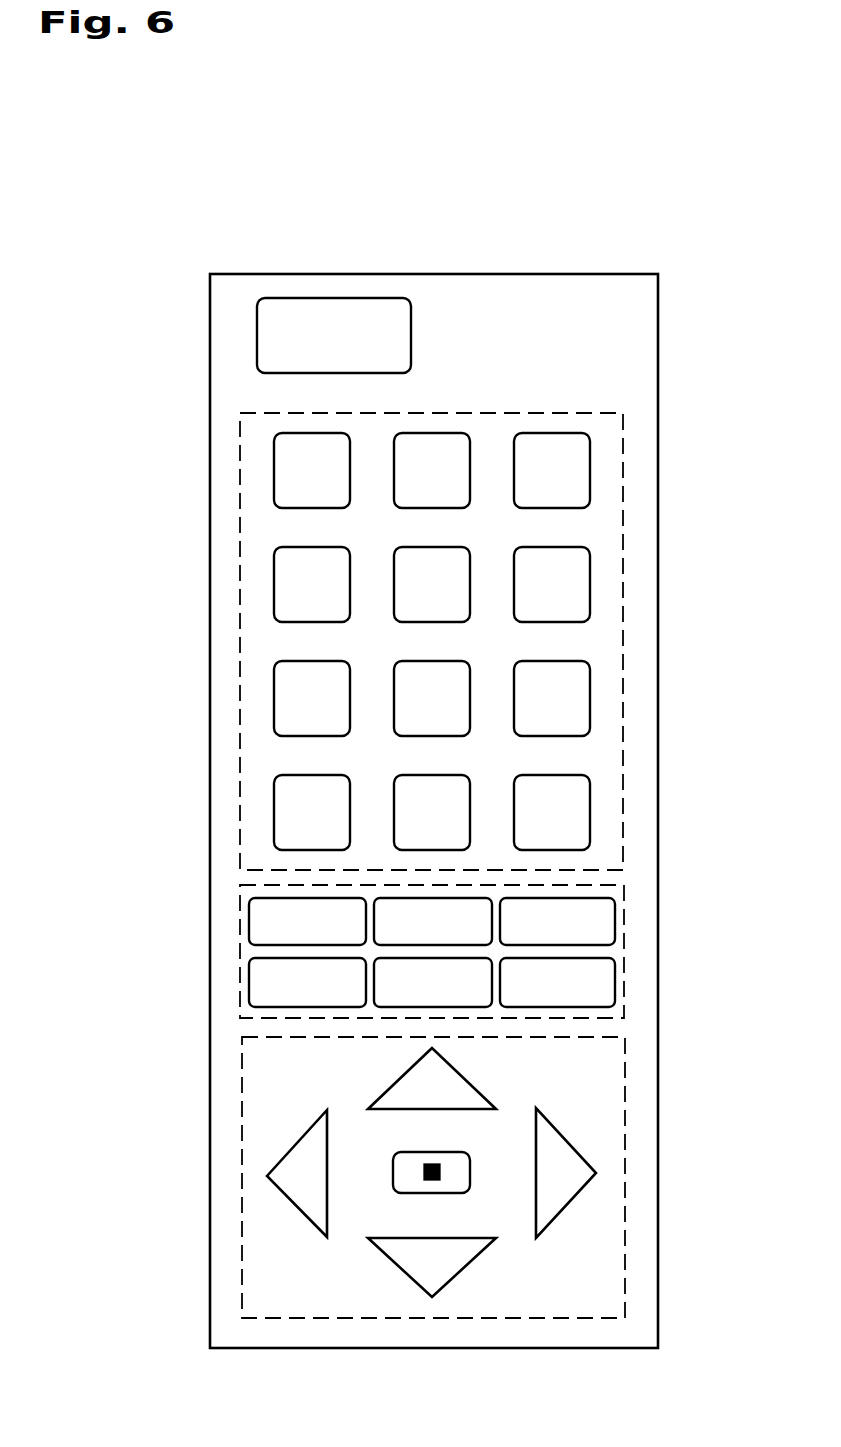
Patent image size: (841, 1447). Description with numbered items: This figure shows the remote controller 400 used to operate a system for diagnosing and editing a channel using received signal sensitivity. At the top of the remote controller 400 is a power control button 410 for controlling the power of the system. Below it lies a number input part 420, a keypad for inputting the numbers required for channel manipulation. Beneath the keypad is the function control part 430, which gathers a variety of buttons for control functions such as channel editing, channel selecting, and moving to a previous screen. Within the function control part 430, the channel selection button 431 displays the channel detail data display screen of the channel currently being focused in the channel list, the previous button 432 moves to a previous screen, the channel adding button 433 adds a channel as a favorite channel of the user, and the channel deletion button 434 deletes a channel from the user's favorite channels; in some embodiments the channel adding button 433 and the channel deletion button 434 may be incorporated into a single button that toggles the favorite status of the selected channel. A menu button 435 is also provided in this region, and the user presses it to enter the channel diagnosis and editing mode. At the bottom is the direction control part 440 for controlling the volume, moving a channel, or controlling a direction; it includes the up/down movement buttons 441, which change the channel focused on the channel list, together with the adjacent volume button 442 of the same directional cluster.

The remote controller 400 is at (432, 274).
The power control button 410 is at (257, 333).
The number input part 420 is at (240, 600).
The function control part 430 is at (424, 963).
The channel selection button 431 is at (307, 898).
The previous button 432 is at (455, 898).
The channel adding button 433 is at (249, 983).
The channel deletion button 434 is at (432, 1008).
The menu button 435 is at (615, 921).
The direction control part 440 is at (424, 1177).
The up/down movement buttons 441 is at (462, 1078).
The volume up button 442 is at (575, 1150).